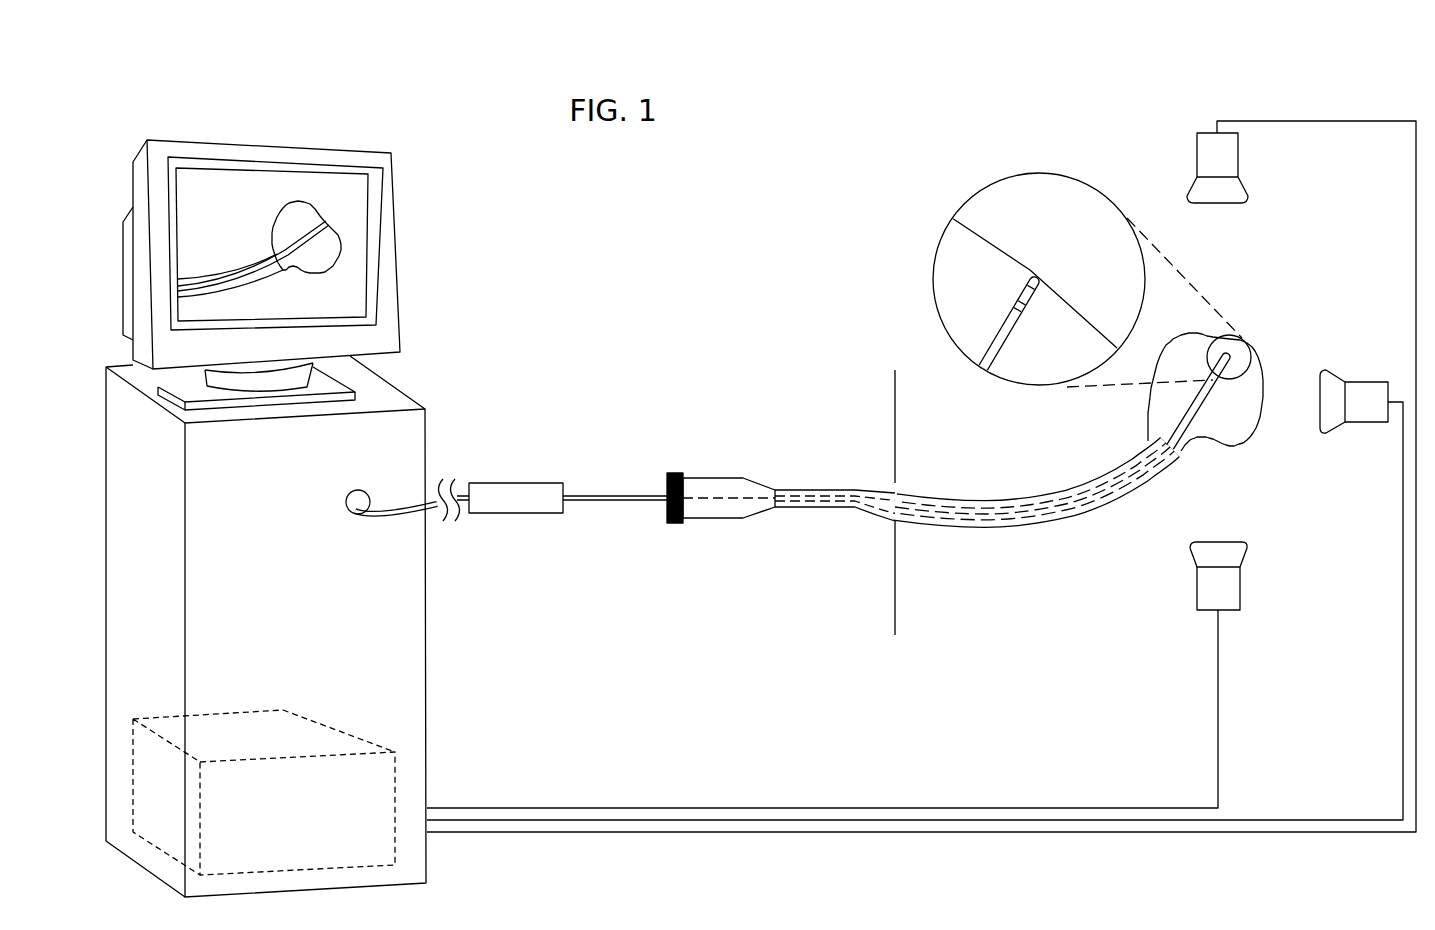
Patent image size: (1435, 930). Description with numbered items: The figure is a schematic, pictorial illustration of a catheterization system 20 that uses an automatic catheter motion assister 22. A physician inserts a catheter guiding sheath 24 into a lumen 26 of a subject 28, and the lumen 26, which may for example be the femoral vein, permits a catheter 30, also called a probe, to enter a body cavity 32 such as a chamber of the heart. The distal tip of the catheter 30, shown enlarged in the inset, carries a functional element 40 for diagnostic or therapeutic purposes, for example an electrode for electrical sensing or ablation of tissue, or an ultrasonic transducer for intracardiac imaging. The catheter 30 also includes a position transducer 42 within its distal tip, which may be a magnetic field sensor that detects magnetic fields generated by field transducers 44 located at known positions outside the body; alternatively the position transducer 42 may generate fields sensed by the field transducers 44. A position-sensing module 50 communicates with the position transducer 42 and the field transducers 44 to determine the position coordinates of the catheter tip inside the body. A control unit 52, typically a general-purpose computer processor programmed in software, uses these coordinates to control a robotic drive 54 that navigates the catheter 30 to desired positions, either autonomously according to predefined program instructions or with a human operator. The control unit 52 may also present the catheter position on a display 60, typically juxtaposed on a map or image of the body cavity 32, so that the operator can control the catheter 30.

The catheterization system 20 is at (134, 88).
The automatic catheter motion assister 22 is at (713, 478).
The catheter guiding sheath 24 is at (857, 490).
The lumen 26 is at (1068, 523).
The subject 28 is at (895, 605).
The catheter 30 is at (605, 496).
The body cavity 32 is at (1218, 447).
The functional element 40 is at (1048, 290).
The position transducer 42 is at (1019, 305).
The field transducers 44 is at (1238, 157).
The position-sensing module 50 is at (397, 775).
The control unit 52 is at (427, 668).
The robotic drive 54 is at (524, 483).
The display 60 is at (257, 138).